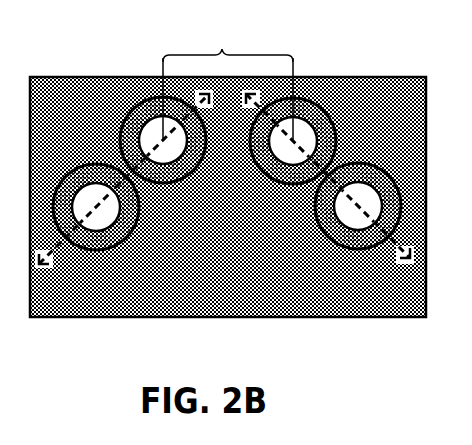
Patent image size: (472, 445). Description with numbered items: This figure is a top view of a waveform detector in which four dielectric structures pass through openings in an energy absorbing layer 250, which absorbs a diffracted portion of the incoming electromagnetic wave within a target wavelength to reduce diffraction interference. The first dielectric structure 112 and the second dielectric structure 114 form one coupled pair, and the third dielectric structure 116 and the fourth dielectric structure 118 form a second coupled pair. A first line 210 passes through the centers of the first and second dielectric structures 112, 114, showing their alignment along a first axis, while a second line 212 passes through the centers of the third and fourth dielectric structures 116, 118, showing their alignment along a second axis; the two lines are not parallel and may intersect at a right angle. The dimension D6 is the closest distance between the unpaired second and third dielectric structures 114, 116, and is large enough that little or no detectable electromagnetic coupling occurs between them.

The energy absorbing layer 250 is at (256, 300).
The first dielectric structure 112 is at (111, 226).
The second dielectric structure 114 is at (138, 138).
The third dielectric structure 116 is at (317, 138).
The fourth dielectric structure 118 is at (328, 235).
The first line 210 is at (58, 252).
The second line 212 is at (399, 250).
The dimension D6 is at (228, 80).